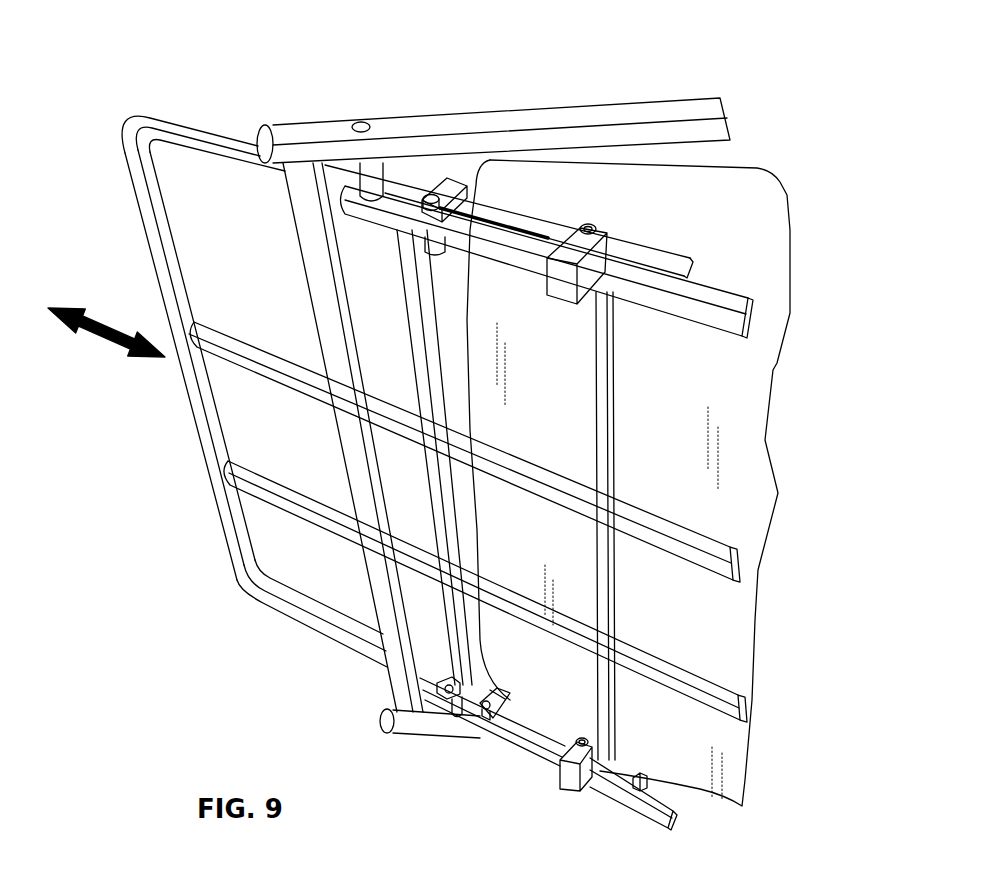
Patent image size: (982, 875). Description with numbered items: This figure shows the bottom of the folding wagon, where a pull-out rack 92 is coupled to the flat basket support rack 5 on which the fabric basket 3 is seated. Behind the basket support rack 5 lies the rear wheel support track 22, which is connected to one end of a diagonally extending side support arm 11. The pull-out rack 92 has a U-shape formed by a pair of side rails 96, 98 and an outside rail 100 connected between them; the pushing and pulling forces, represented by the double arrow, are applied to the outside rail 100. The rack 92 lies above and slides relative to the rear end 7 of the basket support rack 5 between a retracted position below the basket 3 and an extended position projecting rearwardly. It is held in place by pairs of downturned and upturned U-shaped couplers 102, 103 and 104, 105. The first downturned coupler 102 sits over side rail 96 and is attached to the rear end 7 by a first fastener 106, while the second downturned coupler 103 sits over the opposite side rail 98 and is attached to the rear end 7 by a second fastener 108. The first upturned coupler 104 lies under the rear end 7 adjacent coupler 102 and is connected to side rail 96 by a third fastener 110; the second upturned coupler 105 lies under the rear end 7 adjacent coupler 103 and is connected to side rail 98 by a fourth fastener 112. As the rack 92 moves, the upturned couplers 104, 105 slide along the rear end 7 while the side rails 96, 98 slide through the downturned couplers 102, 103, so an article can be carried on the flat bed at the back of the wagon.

The fabric basket 3 is at (760, 372).
The basket support rack 5 is at (520, 214).
The rear end 7 is at (635, 268).
The side support arm 11 is at (507, 115).
The rear wheel support track 22 is at (340, 432).
The pull-out rack 92 is at (397, 396).
The side rail 96 is at (295, 612).
The side rail 98 is at (205, 131).
The outside rail 100 is at (193, 418).
The downturned U-shaped coupler 102 is at (500, 688).
The downturned U-shaped coupler 103 is at (440, 178).
The upturned U-shaped coupler 104 is at (567, 785).
The upturned U-shaped coupler 105 is at (563, 298).
The first fastener 106 is at (480, 712).
The second fastener 108 is at (428, 203).
The third fastener 110 is at (586, 740).
The fourth fastener 112 is at (585, 223).